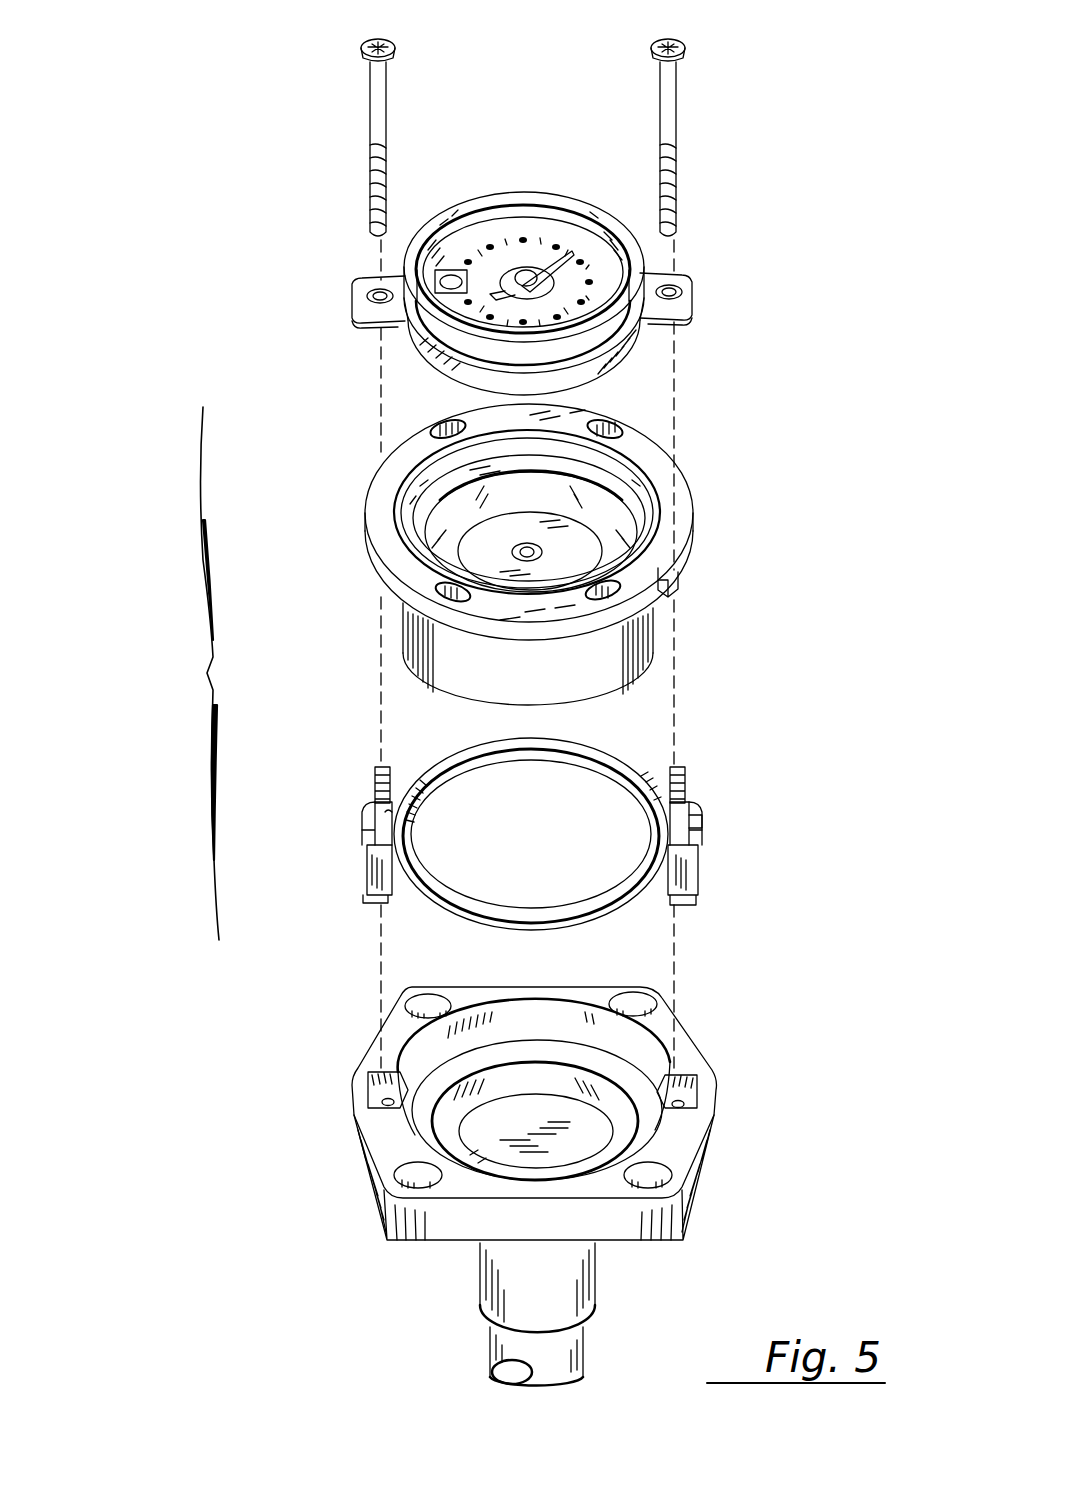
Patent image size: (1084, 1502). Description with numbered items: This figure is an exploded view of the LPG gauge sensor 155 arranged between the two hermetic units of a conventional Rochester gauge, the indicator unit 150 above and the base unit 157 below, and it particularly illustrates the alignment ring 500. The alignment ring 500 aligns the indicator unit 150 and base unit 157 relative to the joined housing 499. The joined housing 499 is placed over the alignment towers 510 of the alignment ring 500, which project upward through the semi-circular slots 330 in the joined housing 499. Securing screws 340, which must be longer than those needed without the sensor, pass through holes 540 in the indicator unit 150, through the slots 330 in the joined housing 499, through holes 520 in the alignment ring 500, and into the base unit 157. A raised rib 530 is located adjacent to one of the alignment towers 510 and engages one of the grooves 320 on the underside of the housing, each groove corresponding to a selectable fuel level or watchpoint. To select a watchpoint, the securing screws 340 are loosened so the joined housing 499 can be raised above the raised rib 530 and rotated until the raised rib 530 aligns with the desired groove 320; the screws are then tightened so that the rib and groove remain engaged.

The indicator unit 150 is at (522, 275).
The LPG gauge sensor 155 is at (192, 673).
The base unit 157 is at (356, 1034).
The grooves 320 is at (547, 554).
The semi-circular slots 330 is at (410, 449).
The securing screws 340 is at (370, 46).
The joined housing 499 is at (657, 638).
The alignment ring 500 is at (501, 834).
The alignment towers 510 is at (362, 876).
The holes 520 is at (372, 826).
The raised rib 530 is at (703, 821).
The holes 540 is at (378, 285).